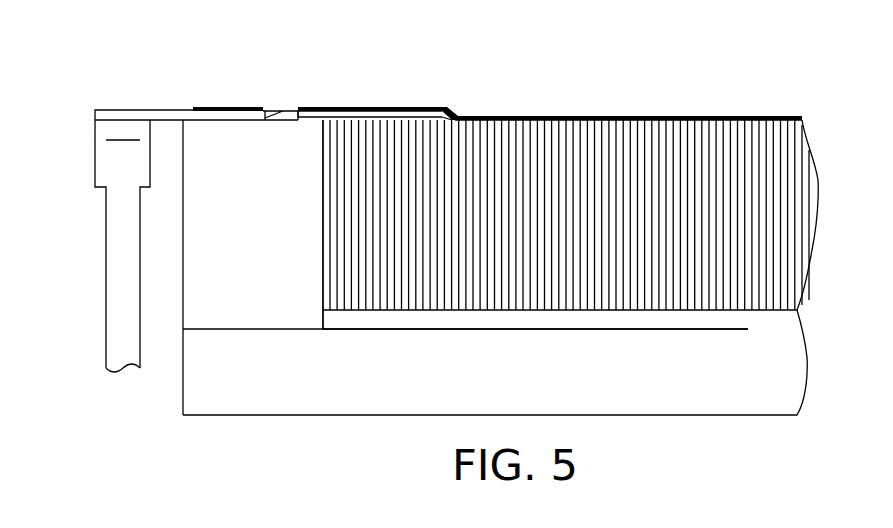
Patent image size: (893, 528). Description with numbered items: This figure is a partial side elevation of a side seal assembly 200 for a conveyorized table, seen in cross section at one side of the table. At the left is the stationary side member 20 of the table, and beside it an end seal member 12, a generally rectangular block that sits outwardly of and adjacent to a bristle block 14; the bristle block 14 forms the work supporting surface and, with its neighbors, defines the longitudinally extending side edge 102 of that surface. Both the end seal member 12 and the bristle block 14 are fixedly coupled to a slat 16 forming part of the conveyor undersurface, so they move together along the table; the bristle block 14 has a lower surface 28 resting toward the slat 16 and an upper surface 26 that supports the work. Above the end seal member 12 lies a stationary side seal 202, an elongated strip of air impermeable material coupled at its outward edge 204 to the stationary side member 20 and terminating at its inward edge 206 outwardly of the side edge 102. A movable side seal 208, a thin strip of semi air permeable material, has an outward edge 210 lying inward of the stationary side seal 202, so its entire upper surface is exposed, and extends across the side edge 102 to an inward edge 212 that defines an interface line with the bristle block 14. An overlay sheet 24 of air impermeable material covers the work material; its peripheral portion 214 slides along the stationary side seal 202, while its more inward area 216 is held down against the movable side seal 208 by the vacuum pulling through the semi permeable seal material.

The end seal member 12 is at (217, 218).
The bristle block 14 is at (773, 189).
The slat 16 is at (368, 397).
The stationary side member 20 is at (125, 250).
The overlay sheet 24 is at (562, 117).
The upper surface of the bristle blocks 26 is at (726, 116).
The lower surface of the bristle block 28 is at (750, 329).
The side edge of the work supporting surface 102 is at (326, 286).
The side seal assembly 200 is at (212, 70).
The stationary side seal 202 is at (138, 95).
The outward edge of the stationary side seal 204 is at (95, 111).
The inward edge of the stationary side seal 206 is at (276, 118).
The movable side seal 208 is at (372, 112).
The outward edge of the movable side seal 210 is at (289, 121).
The inward edge of the movable side seal 212 is at (452, 111).
The peripheral portion of the overlay sheet 214 is at (233, 108).
The inward area of the overlay sheet 216 is at (402, 108).